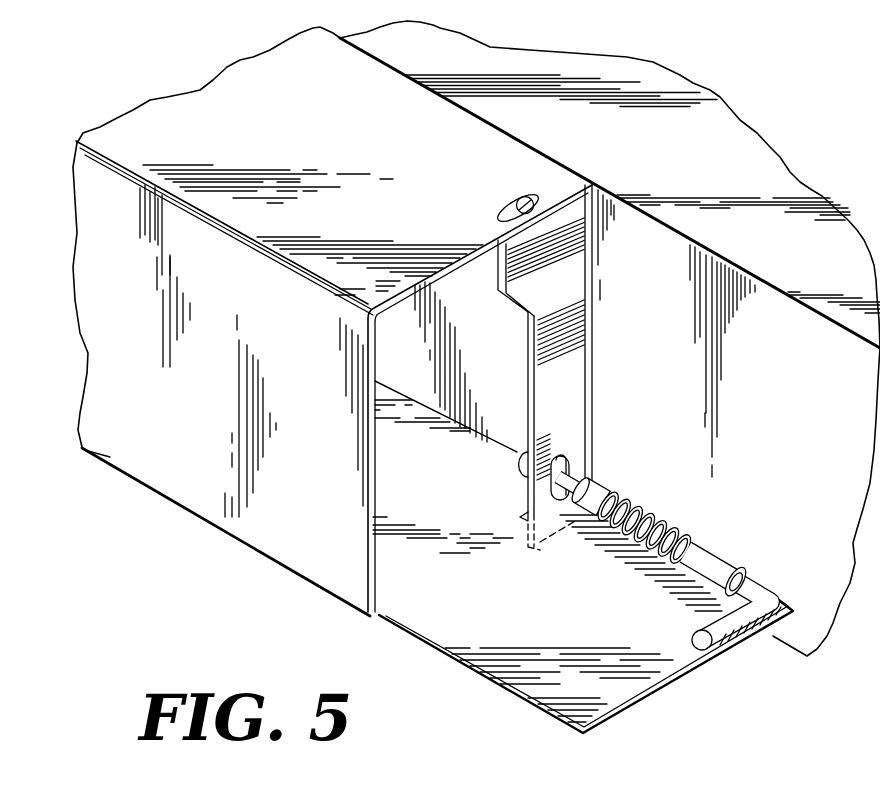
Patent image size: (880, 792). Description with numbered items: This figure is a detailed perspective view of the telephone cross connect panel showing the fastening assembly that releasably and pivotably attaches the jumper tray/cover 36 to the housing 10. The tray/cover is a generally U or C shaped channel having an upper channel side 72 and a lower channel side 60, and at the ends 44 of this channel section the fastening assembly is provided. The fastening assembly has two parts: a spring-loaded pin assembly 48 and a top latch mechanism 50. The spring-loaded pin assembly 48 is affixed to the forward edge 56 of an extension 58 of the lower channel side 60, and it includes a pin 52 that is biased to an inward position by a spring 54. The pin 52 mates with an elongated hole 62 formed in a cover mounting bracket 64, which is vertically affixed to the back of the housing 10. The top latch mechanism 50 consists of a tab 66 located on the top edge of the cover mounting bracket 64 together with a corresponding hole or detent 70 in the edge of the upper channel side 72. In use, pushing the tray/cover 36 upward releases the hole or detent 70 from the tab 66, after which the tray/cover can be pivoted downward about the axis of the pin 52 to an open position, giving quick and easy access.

The housing 10 is at (750, 188).
The jumper tray/cover 36 is at (73, 155).
The ends of the channel section 44 is at (428, 588).
The spring-loaded pin assembly 48 is at (576, 514).
The top latch mechanism 50 is at (563, 266).
The pin 52 is at (750, 587).
The spring 54 is at (690, 540).
The forward edge 56 is at (778, 612).
The extension 58 is at (613, 650).
The lower channel side 60 is at (418, 487).
The elongated hole 62 is at (567, 464).
The cover mounting bracket 64 is at (572, 388).
The tab 66 is at (521, 198).
The hole or detent 70 is at (502, 210).
The upper channel side 72 is at (236, 88).